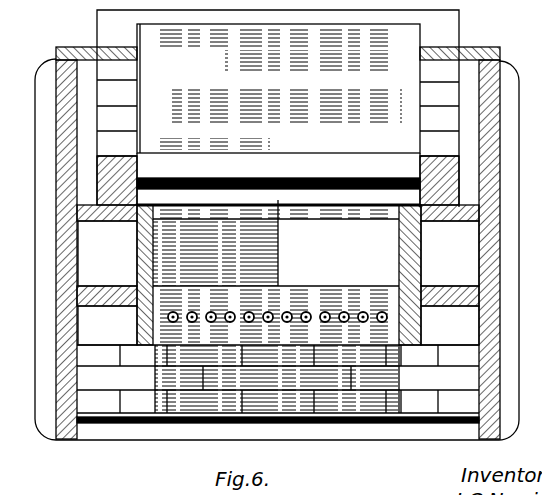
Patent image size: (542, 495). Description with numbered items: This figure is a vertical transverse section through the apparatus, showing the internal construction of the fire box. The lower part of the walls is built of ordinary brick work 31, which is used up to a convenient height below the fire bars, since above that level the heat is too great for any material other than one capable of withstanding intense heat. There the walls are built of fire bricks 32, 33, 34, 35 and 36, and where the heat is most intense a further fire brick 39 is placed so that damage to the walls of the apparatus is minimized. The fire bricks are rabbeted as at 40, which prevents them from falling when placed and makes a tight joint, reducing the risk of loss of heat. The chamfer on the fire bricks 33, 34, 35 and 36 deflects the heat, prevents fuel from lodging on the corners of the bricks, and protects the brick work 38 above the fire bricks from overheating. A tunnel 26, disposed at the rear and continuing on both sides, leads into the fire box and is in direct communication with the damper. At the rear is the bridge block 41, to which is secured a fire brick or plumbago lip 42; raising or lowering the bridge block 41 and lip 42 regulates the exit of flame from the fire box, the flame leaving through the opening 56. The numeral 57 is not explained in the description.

The tunnel 26 is at (278, 253).
The brick work 31 is at (278, 379).
The fire brick 32 is at (399, 302).
The fire brick 33 is at (156, 297).
The fire brick 34 is at (184, 253).
The fire brick 35 is at (246, 253).
The fire brick 36 is at (276, 243).
The brick work 38 is at (278, 118).
The fire brick 39 is at (114, 169).
The rabbet 40 is at (146, 304).
The bridge block 41 is at (278, 88).
The lip 42 is at (278, 180).
The opening 56 is at (278, 214).
The baffle 57 is at (197, 224).